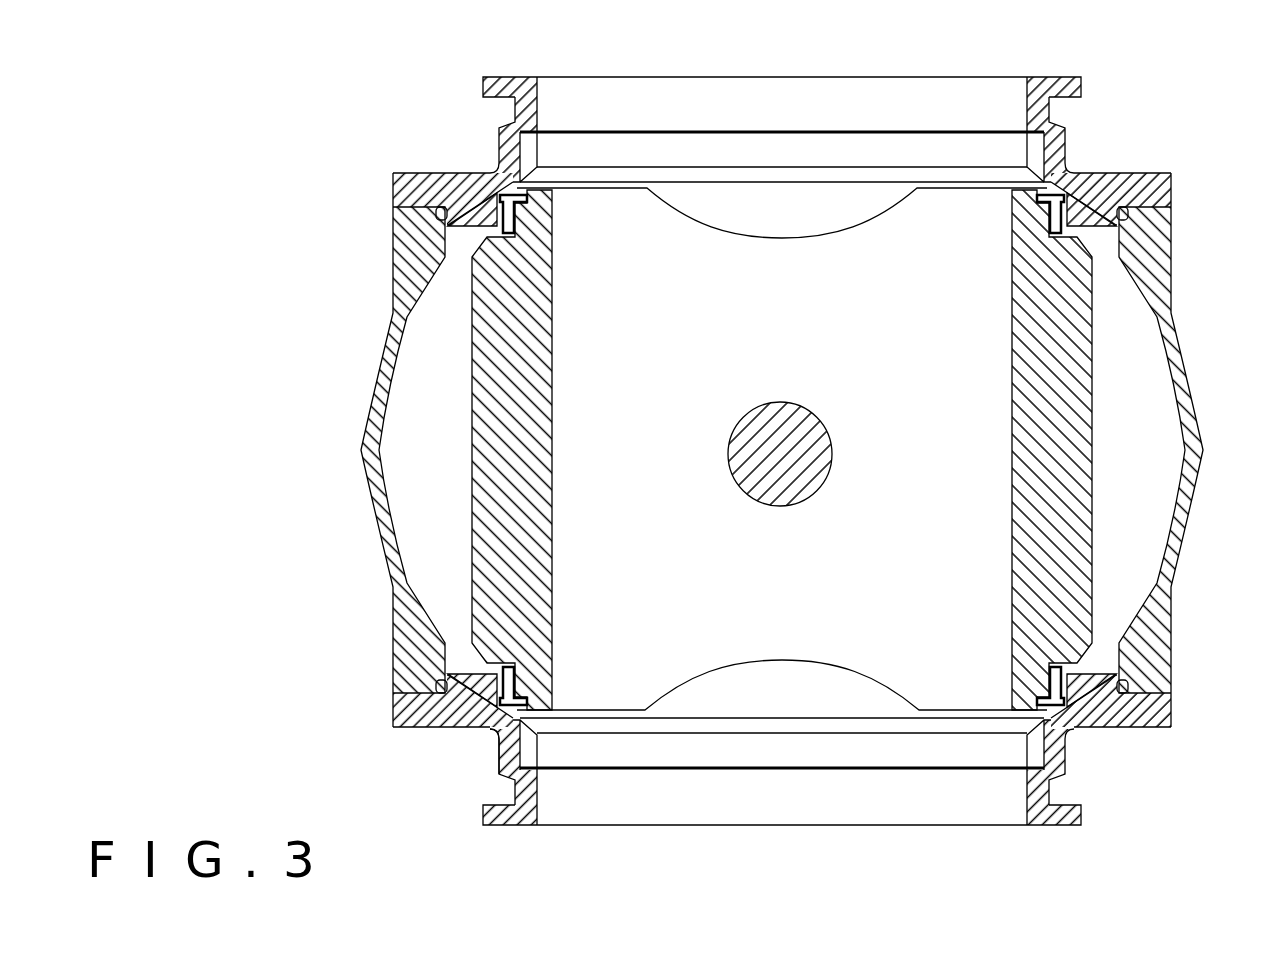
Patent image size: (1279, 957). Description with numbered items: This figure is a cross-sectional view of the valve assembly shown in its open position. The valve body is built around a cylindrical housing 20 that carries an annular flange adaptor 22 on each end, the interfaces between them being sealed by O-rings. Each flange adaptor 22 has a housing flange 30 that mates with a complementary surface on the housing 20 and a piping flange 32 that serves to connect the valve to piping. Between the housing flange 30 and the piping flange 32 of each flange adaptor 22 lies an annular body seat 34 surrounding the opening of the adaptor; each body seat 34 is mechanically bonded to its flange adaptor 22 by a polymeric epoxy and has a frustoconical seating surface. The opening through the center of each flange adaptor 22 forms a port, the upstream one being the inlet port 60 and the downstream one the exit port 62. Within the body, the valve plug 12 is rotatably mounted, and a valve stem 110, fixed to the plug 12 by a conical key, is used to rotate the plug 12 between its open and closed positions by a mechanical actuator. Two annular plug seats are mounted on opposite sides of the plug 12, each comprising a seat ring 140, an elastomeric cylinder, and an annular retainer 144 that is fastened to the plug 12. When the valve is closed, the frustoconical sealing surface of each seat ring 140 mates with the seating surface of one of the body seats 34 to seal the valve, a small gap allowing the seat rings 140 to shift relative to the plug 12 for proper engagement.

The valve plug 12 is at (1100, 418).
The cylindrical housing 20 is at (1173, 262).
The flange adaptor 22 is at (1063, 140).
The housing flange 30 is at (1172, 188).
The piping flange 32 is at (1083, 87).
The body seat 34 is at (537, 750).
The inlet port 60 is at (853, 77).
The exit port 62 is at (848, 827).
The valve stem 110 is at (813, 410).
The seat ring 140 is at (498, 743).
The annular retainer 144 is at (493, 672).